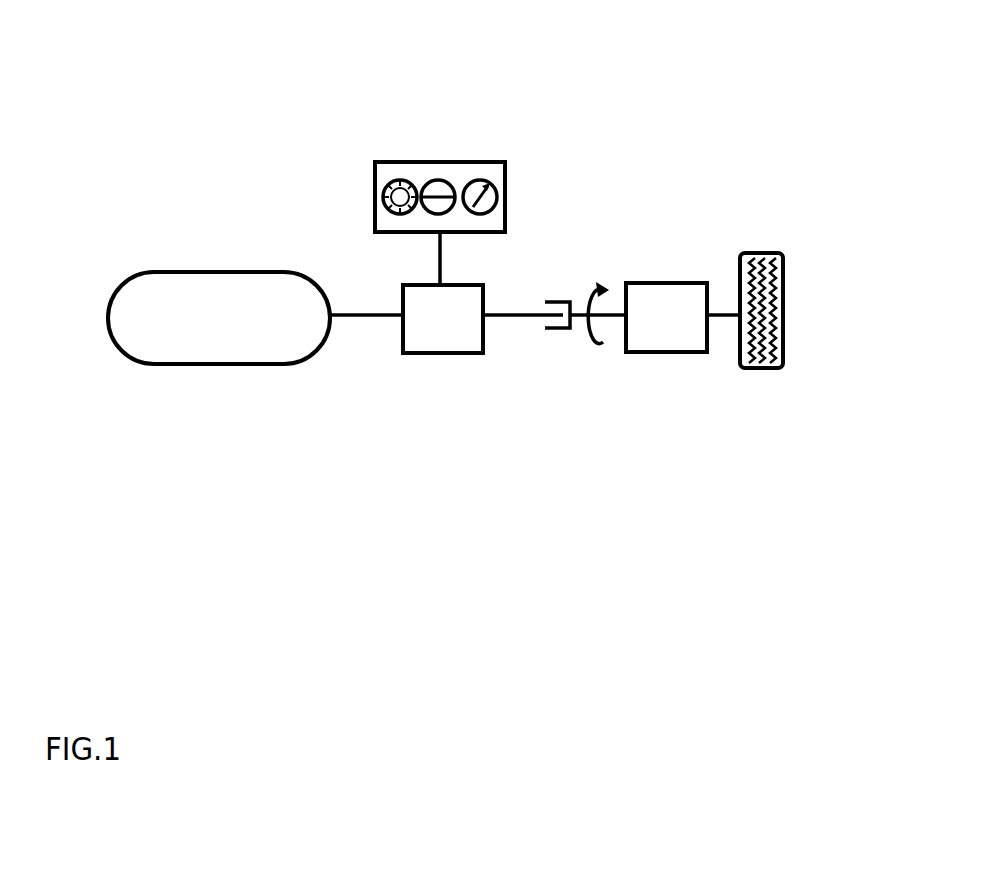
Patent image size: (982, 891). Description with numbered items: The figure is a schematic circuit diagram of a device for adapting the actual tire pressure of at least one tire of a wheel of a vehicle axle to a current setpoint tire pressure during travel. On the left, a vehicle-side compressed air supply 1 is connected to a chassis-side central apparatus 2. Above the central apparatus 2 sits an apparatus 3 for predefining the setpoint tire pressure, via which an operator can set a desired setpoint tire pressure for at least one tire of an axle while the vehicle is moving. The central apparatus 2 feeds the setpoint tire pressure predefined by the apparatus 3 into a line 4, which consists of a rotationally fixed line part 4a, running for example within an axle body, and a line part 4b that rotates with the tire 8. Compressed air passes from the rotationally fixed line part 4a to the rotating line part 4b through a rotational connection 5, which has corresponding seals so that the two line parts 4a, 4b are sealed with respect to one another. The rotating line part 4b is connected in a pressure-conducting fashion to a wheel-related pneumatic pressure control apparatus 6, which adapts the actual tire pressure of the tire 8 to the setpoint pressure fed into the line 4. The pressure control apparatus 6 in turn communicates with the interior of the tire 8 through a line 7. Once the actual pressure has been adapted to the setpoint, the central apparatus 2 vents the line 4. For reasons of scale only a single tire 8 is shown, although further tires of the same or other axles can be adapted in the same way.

The vehicle-side compressed air supply 1 is at (195, 342).
The chassis-side central apparatus 2 is at (420, 343).
The apparatus for predefining the setpoint tire pressure 3 is at (455, 161).
The line 4 is at (513, 262).
The rotationally fixed line part 4a is at (531, 310).
The rotating line part 4b is at (613, 315).
The rotational connection 5 is at (602, 287).
The pneumatic pressure control apparatus 6 is at (682, 338).
The line 7 is at (713, 340).
The tire 8 is at (783, 310).